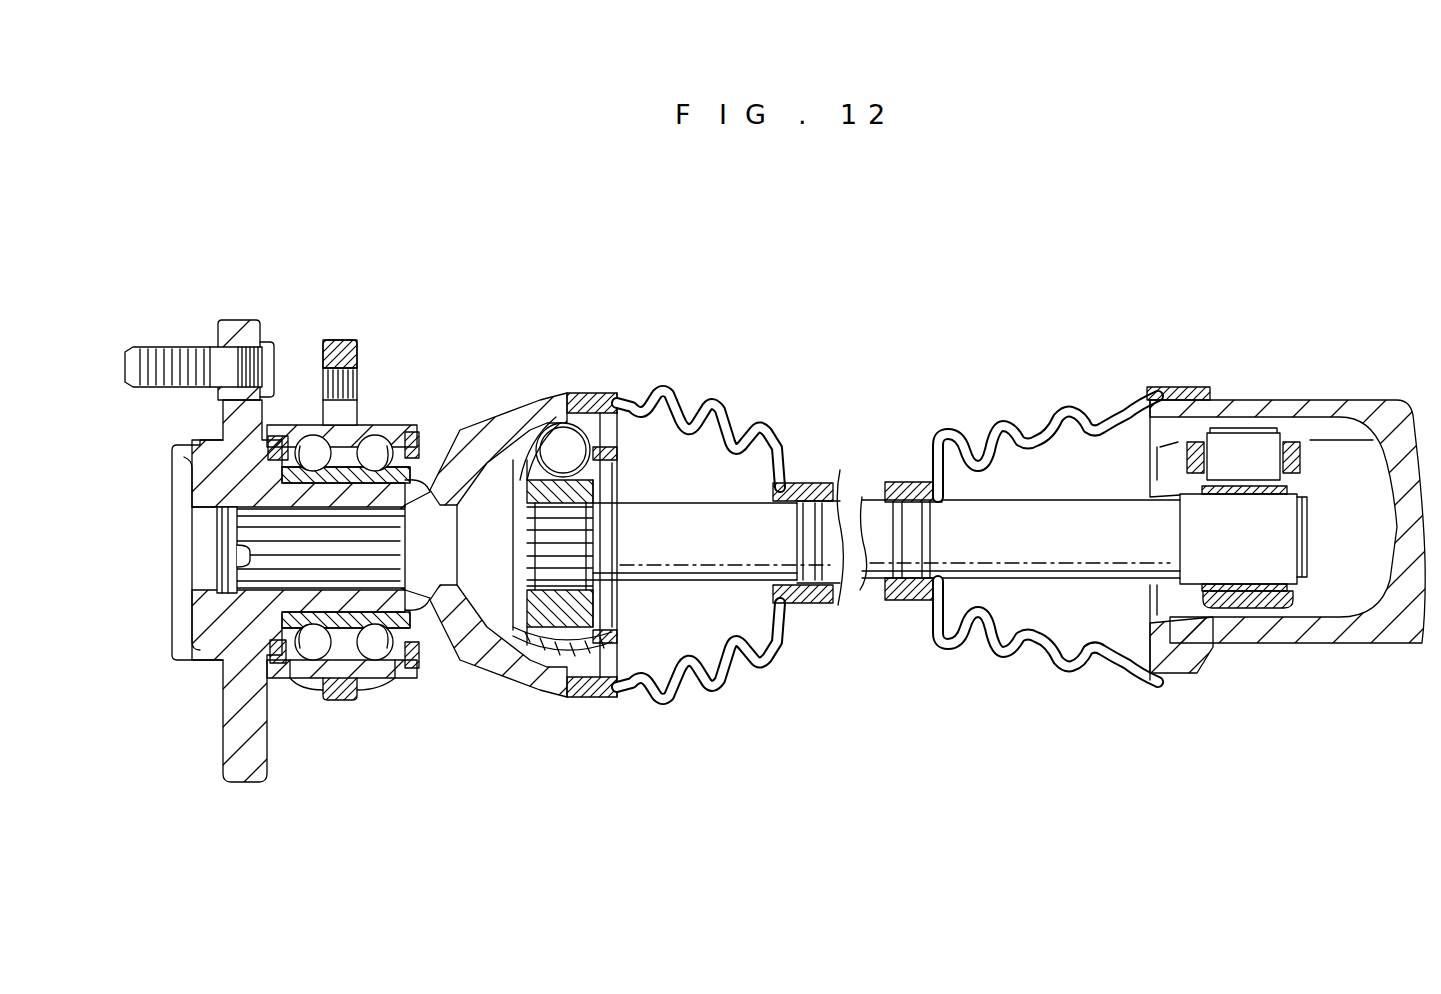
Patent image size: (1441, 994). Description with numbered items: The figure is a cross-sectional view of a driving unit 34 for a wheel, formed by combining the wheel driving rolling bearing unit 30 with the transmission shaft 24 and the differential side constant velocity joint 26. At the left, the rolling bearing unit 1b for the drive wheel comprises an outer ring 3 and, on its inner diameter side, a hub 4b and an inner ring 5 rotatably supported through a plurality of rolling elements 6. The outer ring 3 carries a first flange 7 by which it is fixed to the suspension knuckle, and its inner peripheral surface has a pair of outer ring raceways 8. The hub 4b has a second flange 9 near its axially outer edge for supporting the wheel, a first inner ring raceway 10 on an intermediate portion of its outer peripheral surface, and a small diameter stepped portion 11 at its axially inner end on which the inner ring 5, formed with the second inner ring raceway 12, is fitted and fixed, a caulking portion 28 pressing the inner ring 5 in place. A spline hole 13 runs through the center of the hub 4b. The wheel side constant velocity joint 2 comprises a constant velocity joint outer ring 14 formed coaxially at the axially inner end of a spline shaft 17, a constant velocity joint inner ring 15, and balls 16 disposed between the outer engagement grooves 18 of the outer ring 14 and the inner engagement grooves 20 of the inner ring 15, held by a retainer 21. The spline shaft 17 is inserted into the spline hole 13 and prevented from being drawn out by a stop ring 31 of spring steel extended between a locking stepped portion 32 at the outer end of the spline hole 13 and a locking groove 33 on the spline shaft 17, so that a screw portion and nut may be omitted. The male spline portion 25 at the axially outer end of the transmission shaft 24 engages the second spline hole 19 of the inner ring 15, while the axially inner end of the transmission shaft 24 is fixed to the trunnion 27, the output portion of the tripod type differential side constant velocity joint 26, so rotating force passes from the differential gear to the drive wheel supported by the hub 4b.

The rolling bearing unit for the drive wheel 1b is at (366, 316).
The wheel side constant velocity joint 2 is at (612, 305).
The outer ring 3 is at (402, 682).
The hub 4b is at (230, 442).
The inner ring 5 is at (404, 350).
The rolling elements 6 is at (313, 452).
The first flange 7 is at (338, 340).
The outer ring raceways 8 is at (308, 662).
The second flange 9 is at (236, 332).
The first inner ring raceway 10 is at (214, 368).
The small diameter stepped portion 11 is at (438, 538).
The second inner ring raceway 12 is at (375, 448).
The spline hole 13 is at (235, 445).
The constant velocity joint outer ring 14 is at (497, 437).
The constant velocity joint inner ring 15 is at (585, 480).
The balls 16 is at (540, 430).
The spline shaft 17 is at (198, 660).
The outer engagement grooves 18 is at (560, 425).
The second spline hole 19 is at (607, 567).
The inner engagement grooves 20 is at (601, 393).
The retainer 21 is at (612, 404).
The transmission shaft 24 is at (667, 527).
The male spline portion 25 is at (605, 557).
The differential side constant velocity joint 26 is at (1153, 370).
The trunnion 27 is at (1256, 600).
The caulking portion 28 is at (446, 512).
The wheel driving rolling bearing unit 30 is at (494, 285).
The stop ring 31 is at (232, 488).
The locking stepped portion 32 is at (245, 583).
The locking groove 33 is at (242, 532).
The driving unit for a wheel 34 is at (748, 287).